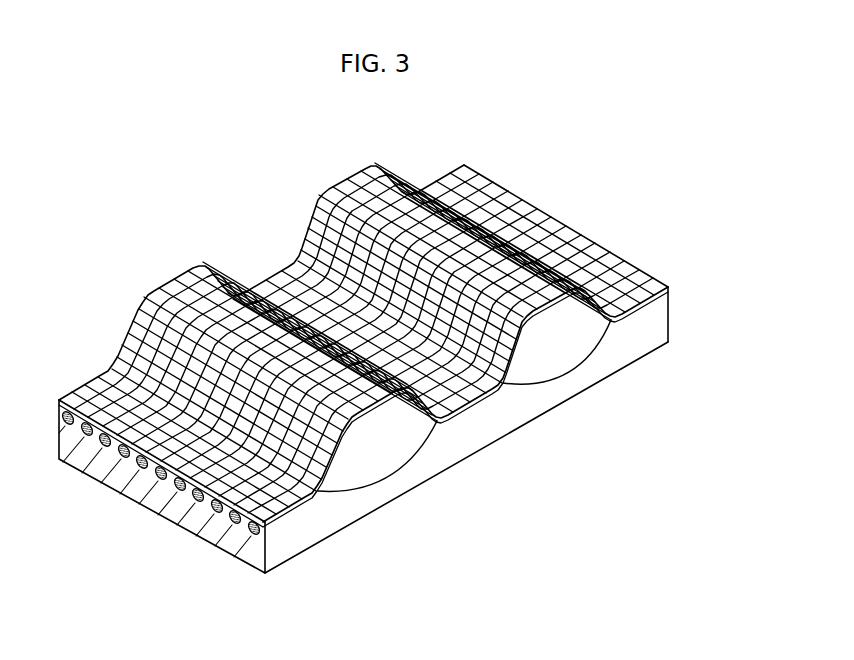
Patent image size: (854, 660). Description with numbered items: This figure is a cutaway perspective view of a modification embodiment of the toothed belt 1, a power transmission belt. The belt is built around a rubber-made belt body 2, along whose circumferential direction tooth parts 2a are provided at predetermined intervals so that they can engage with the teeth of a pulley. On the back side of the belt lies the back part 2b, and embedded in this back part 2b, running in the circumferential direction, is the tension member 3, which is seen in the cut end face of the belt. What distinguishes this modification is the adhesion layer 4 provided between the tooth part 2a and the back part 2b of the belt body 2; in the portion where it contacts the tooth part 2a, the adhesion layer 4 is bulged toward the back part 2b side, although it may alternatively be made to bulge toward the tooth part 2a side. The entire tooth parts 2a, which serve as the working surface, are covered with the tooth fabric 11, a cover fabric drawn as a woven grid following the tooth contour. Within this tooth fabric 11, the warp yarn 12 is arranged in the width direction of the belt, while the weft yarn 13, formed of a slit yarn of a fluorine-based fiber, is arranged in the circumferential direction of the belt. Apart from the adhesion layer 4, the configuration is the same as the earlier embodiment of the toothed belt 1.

The toothed belt 1 is at (580, 194).
The belt body 2 is at (312, 548).
The tooth part 2a is at (397, 425).
The back part 2b is at (320, 517).
The tension member 3 is at (213, 513).
The adhesion layer 4 is at (393, 480).
The tooth fabric 11 is at (108, 363).
The warp yarn 12 is at (216, 272).
The weft yarn 13 is at (178, 284).